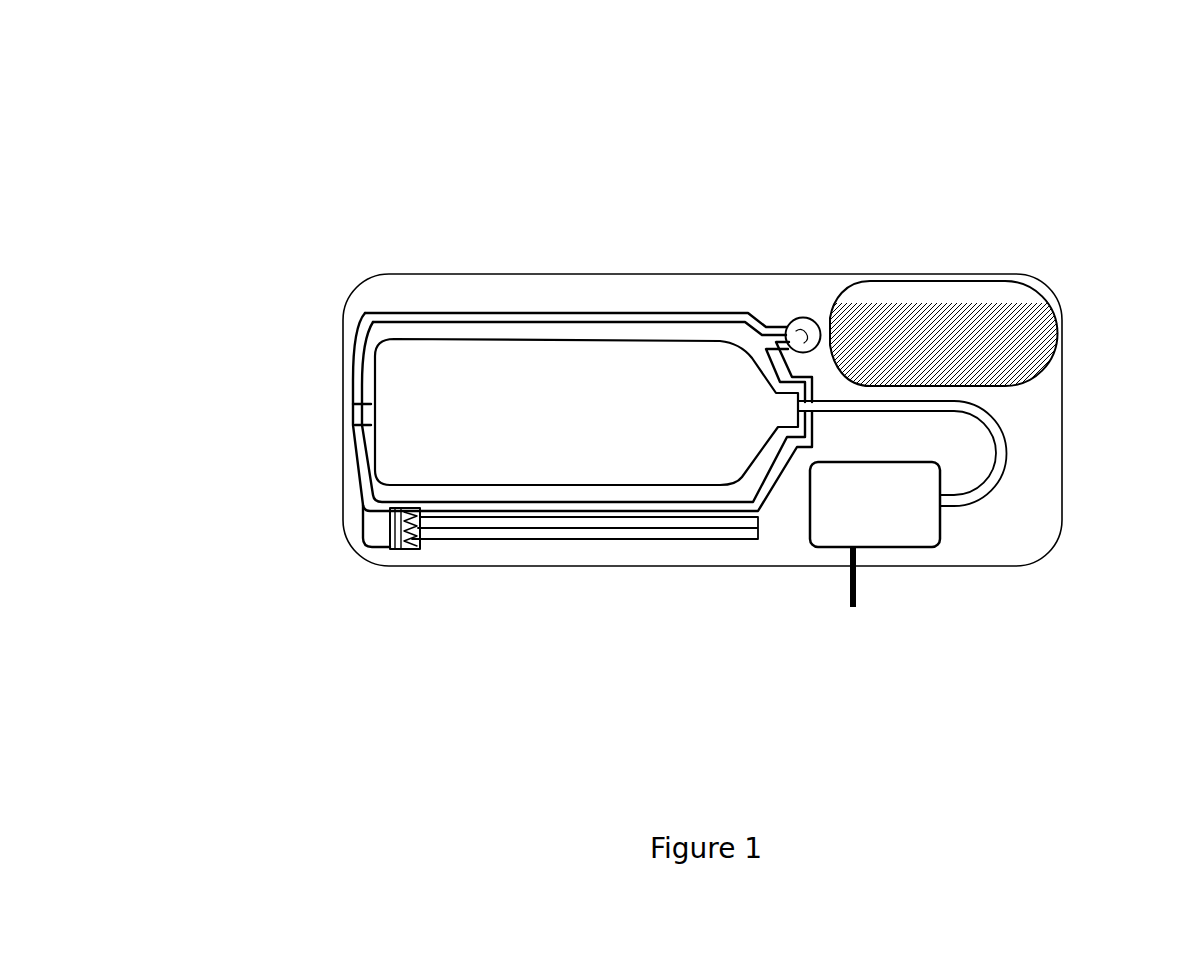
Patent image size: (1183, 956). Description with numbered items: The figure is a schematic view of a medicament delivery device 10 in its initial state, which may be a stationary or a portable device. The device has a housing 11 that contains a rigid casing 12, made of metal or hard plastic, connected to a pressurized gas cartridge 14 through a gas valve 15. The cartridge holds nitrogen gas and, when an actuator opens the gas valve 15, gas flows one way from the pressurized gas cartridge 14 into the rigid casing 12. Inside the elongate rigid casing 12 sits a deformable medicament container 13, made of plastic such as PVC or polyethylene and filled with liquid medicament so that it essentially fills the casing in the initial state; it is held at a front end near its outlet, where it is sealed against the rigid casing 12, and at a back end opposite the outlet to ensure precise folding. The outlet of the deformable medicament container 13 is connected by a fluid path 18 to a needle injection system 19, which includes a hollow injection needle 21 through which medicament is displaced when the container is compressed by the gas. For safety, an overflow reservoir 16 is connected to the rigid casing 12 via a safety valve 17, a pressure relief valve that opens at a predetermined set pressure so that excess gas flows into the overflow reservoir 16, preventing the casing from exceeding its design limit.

The medicament delivery device 10 is at (692, 32).
The housing 11 is at (713, 560).
The rigid casing 12 is at (507, 313).
The deformable medicament container 13 is at (462, 373).
The pressurized gas cartridge 14 is at (948, 330).
The gas valve 15 is at (801, 318).
The overflow reservoir 16 is at (513, 528).
The safety valve 17 is at (393, 525).
The fluid path 18 is at (1003, 437).
The needle injection system 19 is at (885, 508).
The hollow injection needle 21 is at (855, 597).